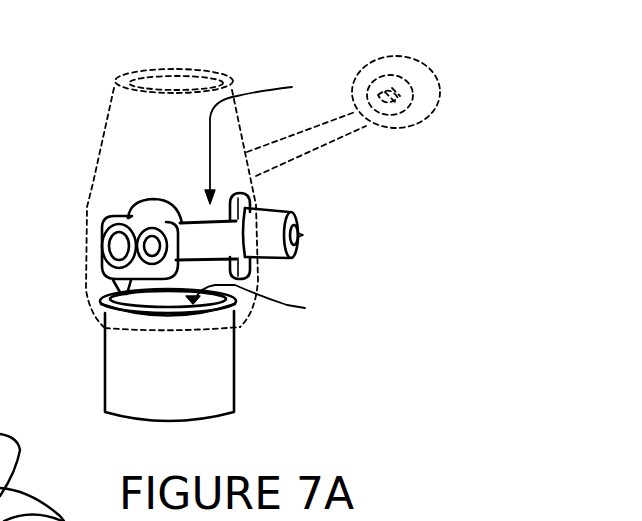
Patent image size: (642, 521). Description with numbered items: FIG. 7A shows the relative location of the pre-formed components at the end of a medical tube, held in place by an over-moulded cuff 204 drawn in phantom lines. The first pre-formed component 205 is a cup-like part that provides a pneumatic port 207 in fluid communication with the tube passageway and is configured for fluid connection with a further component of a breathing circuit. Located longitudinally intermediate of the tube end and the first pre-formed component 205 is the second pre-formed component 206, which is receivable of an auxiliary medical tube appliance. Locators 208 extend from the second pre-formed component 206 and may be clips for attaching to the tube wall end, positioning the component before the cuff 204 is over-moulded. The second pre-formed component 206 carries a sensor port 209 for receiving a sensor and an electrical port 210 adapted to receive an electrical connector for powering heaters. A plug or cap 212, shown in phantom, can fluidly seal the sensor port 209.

The cuff 204 is at (112, 186).
The first pre-formed component 205 is at (243, 398).
The second pre-formed component 206 is at (267, 138).
The pneumatic port 207 is at (266, 303).
The locator 208 is at (145, 200).
The sensor port 209 is at (300, 235).
The electrical port 210 is at (138, 251).
The plug or cap 212 is at (387, 67).